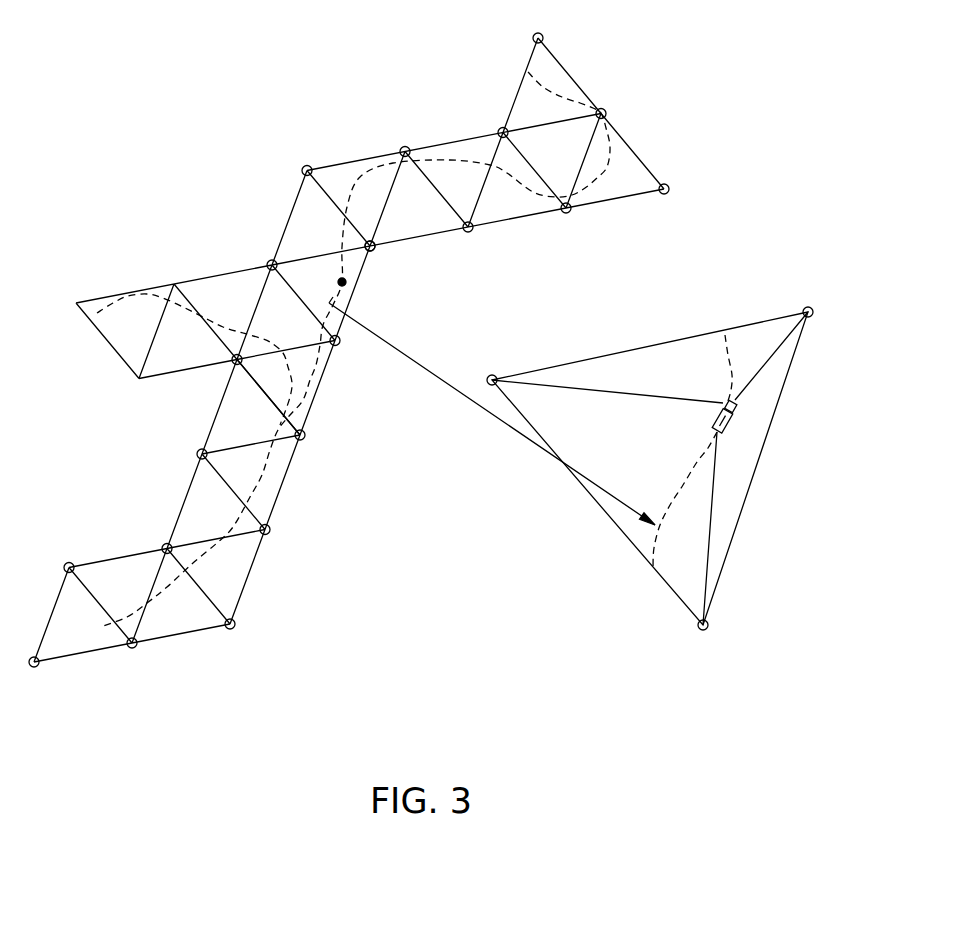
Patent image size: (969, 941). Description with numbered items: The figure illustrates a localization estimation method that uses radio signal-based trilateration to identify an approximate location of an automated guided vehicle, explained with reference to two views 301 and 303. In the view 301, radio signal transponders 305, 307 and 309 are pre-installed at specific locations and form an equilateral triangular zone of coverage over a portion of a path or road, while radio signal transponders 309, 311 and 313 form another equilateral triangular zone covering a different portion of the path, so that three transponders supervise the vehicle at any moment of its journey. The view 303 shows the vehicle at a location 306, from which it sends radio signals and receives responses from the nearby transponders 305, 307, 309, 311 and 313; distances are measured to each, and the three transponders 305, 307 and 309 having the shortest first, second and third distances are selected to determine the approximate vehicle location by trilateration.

The radio signal transponder arrangement view 301 is at (661, 147).
The trilateration example view 303 is at (783, 280).
The radio signal transponder 305 is at (371, 312).
The AGV location 306 is at (514, 353).
The radio signal transponder 307 is at (615, 279).
The radio signal transponder 309 is at (527, 505).
The radio signal transponder 311 is at (190, 381).
The radio signal transponder 313 is at (299, 413).